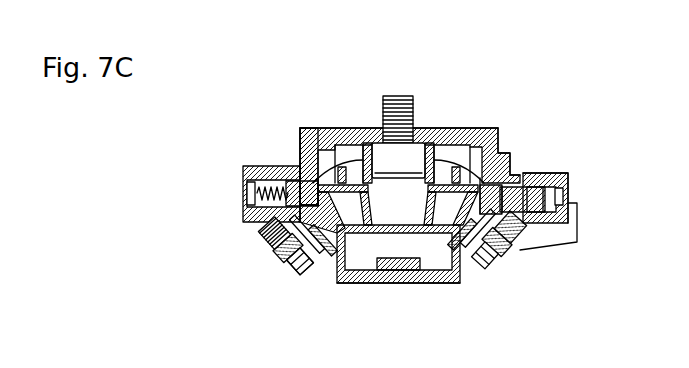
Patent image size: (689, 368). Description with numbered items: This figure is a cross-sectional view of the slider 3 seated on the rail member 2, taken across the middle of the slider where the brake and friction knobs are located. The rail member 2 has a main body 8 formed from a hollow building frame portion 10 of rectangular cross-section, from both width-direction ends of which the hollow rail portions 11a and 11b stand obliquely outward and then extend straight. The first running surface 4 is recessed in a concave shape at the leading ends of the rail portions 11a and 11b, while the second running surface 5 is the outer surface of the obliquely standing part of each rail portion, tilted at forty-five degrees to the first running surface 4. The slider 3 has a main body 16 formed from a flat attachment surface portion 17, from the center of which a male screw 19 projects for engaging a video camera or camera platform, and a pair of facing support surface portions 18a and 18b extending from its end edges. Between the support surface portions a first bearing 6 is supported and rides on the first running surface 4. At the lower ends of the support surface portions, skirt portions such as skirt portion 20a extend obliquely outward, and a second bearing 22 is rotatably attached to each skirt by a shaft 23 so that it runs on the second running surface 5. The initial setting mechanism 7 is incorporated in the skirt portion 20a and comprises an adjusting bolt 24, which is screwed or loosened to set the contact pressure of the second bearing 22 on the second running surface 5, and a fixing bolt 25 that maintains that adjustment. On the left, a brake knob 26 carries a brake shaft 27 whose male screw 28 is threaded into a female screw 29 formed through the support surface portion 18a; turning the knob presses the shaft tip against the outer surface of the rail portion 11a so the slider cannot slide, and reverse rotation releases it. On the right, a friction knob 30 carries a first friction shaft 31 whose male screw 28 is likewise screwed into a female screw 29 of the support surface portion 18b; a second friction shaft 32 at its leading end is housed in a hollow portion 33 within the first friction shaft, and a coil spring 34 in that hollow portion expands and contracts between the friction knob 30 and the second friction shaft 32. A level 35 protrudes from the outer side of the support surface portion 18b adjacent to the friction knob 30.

The rail member 2 is at (410, 285).
The slider 3 is at (449, 82).
The first running surface 4 is at (368, 150).
The second running surface 5 is at (327, 212).
The first bearing 6 is at (348, 138).
The initial setting mechanism 7 is at (262, 268).
The main body 8 is at (441, 288).
The building frame portion 10 is at (350, 275).
The rail portion 11a is at (342, 170).
The rail portion 11b is at (492, 175).
The main body 16 is at (444, 99).
The attachment surface portion 17 is at (453, 160).
The support surface portion 18a is at (302, 150).
The support surface portion 18b is at (510, 150).
The male screw 19 is at (404, 95).
The skirt portion 20a is at (278, 258).
The second bearing 22 is at (300, 265).
The shaft 23 is at (317, 258).
The adjusting bolt 24 is at (280, 270).
The fixing bolt 25 is at (270, 236).
The brake knob 26 is at (243, 190).
The brake shaft 27 is at (278, 172).
The male screw 28 is at (308, 182).
The female screw 29 is at (314, 178).
The friction knob 30 is at (575, 178).
The first friction shaft 31 is at (540, 188).
The second friction shaft 32 is at (490, 262).
The hollow portion 33 is at (566, 176).
The coil spring 34 is at (564, 197).
The level 35 is at (577, 232).